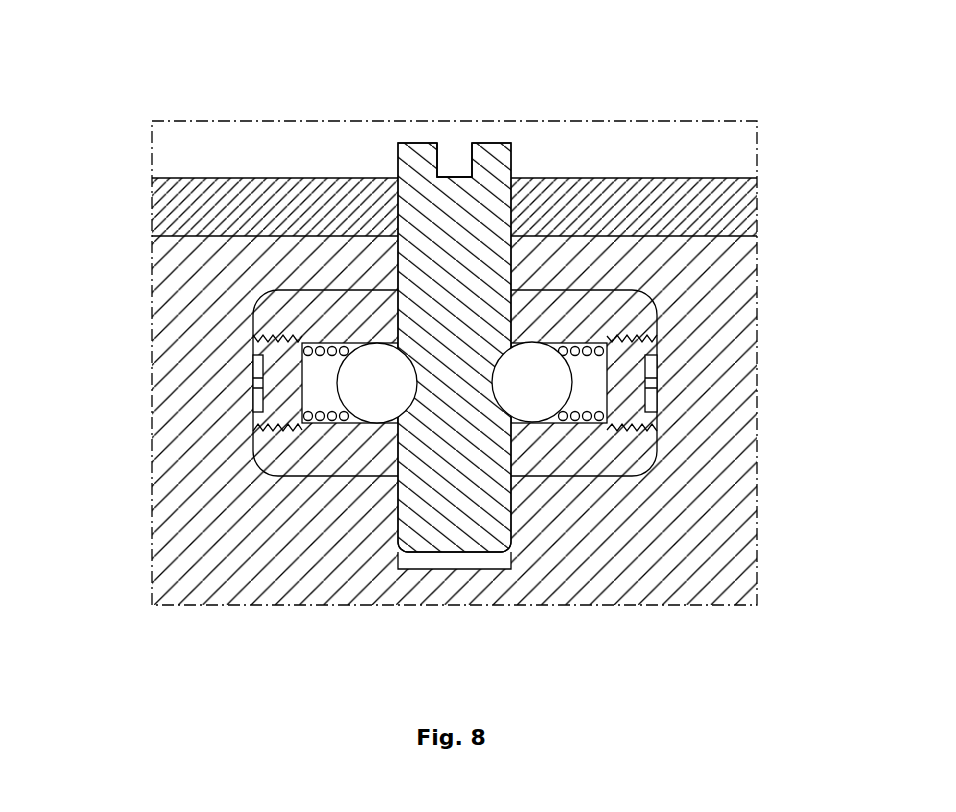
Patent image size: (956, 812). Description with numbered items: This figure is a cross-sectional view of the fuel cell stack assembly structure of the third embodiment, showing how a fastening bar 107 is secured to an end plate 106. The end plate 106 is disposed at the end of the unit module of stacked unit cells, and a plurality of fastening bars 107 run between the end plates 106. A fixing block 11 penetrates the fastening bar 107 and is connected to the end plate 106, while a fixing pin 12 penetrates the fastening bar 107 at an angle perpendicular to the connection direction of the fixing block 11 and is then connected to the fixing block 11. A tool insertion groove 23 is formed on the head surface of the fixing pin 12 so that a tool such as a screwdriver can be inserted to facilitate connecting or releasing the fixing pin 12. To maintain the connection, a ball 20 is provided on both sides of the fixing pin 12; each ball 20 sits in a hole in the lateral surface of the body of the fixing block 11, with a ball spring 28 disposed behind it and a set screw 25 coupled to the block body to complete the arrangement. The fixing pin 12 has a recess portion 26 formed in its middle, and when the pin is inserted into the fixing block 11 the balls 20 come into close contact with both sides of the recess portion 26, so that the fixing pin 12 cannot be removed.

The fixing pin 12 is at (409, 143).
The tool insertion groove 23 is at (452, 157).
The ball 20 is at (527, 370).
The fastening bar 107 is at (647, 197).
The end plate 106 is at (183, 283).
The fixing block 11 is at (633, 312).
The set screw 25 is at (633, 362).
The recess portion 26 is at (420, 380).
The ball spring 28 is at (582, 407).